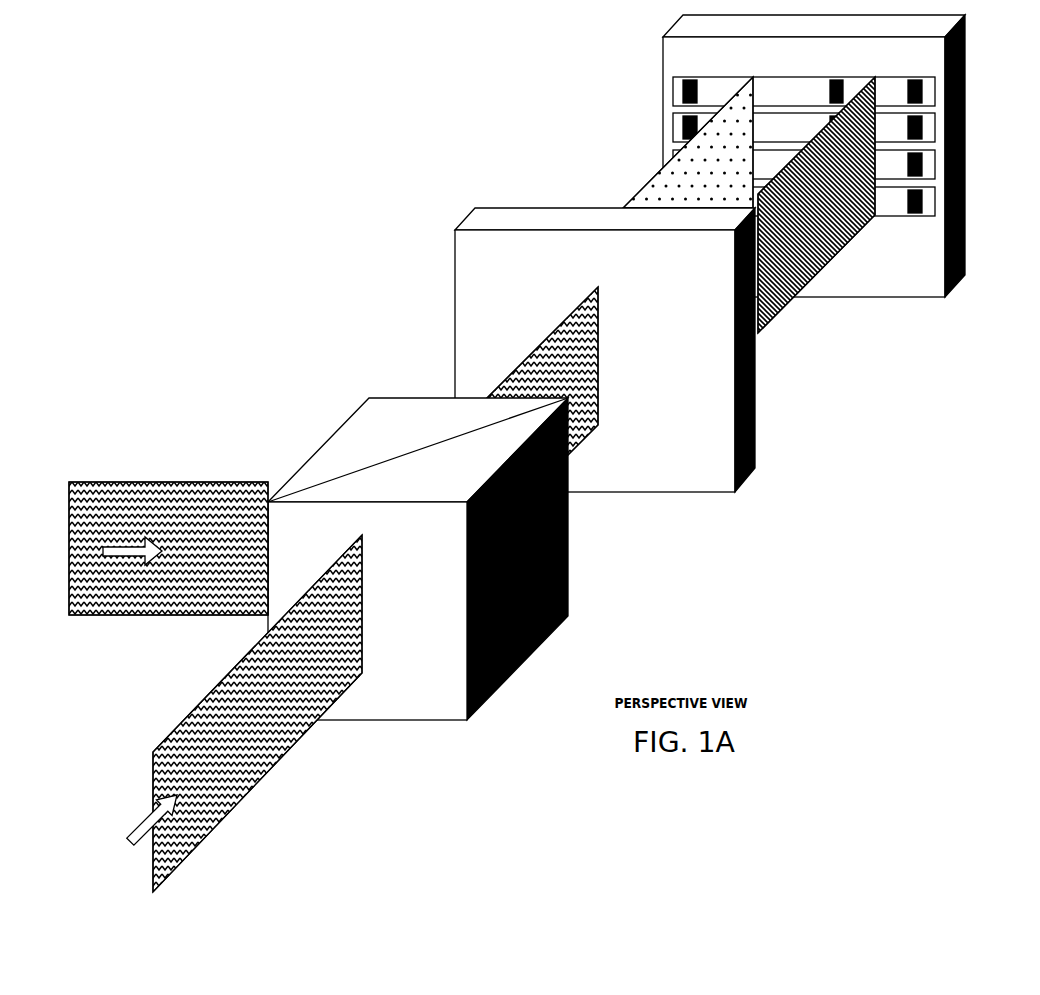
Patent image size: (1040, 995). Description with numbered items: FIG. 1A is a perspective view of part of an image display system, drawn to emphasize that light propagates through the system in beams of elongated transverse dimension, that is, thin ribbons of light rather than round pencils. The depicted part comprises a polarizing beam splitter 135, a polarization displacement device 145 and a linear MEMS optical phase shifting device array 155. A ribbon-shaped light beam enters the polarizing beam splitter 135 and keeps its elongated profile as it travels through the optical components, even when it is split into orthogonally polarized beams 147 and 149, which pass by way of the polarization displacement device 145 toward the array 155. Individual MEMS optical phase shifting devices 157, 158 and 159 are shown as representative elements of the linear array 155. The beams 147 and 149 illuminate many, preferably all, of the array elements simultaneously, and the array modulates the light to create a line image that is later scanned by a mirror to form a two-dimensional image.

The polarizing beam splitter 135 is at (343, 407).
The polarization displacement device 145 is at (462, 217).
The orthogonally polarized beam 147 is at (640, 178).
The orthogonally polarized beam 149 is at (790, 318).
The MEMS optical phase shifting device array 155 is at (920, 300).
The MEMS optical phase shifting device 157 is at (932, 90).
The MEMS optical phase shifting device 158 is at (932, 127).
The MEMS optical phase shifting device 159 is at (932, 165).